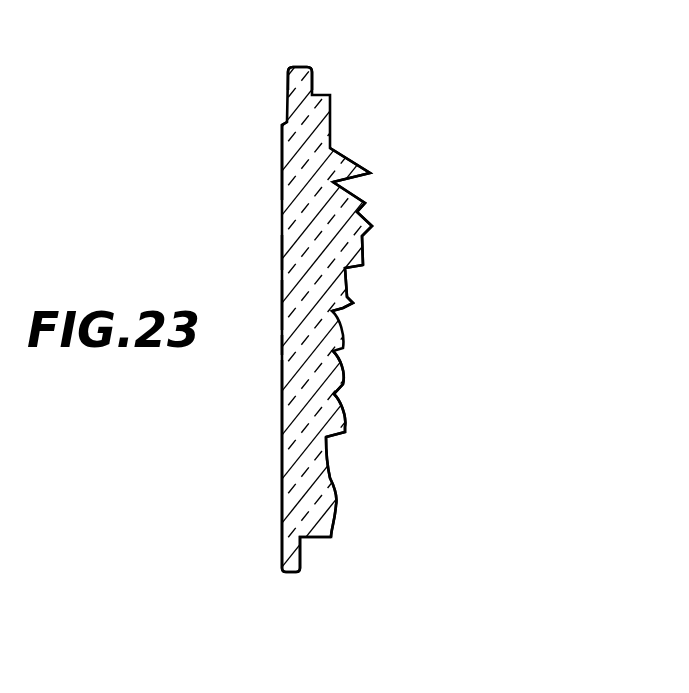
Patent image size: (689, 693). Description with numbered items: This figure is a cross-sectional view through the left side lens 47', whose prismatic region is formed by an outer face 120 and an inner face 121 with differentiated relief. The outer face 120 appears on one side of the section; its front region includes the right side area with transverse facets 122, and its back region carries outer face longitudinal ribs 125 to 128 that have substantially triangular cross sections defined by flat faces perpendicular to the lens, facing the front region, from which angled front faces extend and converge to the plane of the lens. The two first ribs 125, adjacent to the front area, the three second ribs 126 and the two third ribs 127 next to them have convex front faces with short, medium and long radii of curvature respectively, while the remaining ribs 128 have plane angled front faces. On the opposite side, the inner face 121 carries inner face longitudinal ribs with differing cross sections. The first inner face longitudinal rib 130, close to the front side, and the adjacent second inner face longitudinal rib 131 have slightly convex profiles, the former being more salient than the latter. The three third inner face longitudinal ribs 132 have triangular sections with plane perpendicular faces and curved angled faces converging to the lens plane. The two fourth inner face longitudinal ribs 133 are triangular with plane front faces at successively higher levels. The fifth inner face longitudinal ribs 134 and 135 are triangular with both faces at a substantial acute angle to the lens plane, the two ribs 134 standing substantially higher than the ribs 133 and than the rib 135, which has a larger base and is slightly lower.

The left side lens 47' is at (269, 73).
The outer face 120 is at (220, 405).
The inner face 121 is at (466, 391).
The right side area with transverse facets 122 is at (280, 508).
The first outer face longitudinal ribs 125 is at (283, 343).
The second outer face longitudinal ribs 126 is at (283, 283).
The third outer face longitudinal ribs 127 is at (283, 240).
The remaining outer face longitudinal ribs 128 is at (284, 151).
The first inner face longitudinal rib 130 is at (333, 538).
The second inner face longitudinal rib 131 is at (326, 465).
The third inner face longitudinal ribs 132 is at (345, 350).
The fourth inner face longitudinal ribs 133 is at (363, 266).
The fifth inner face longitudinal ribs 134 is at (367, 205).
The fifth inner face longitudinal rib 135 is at (372, 173).